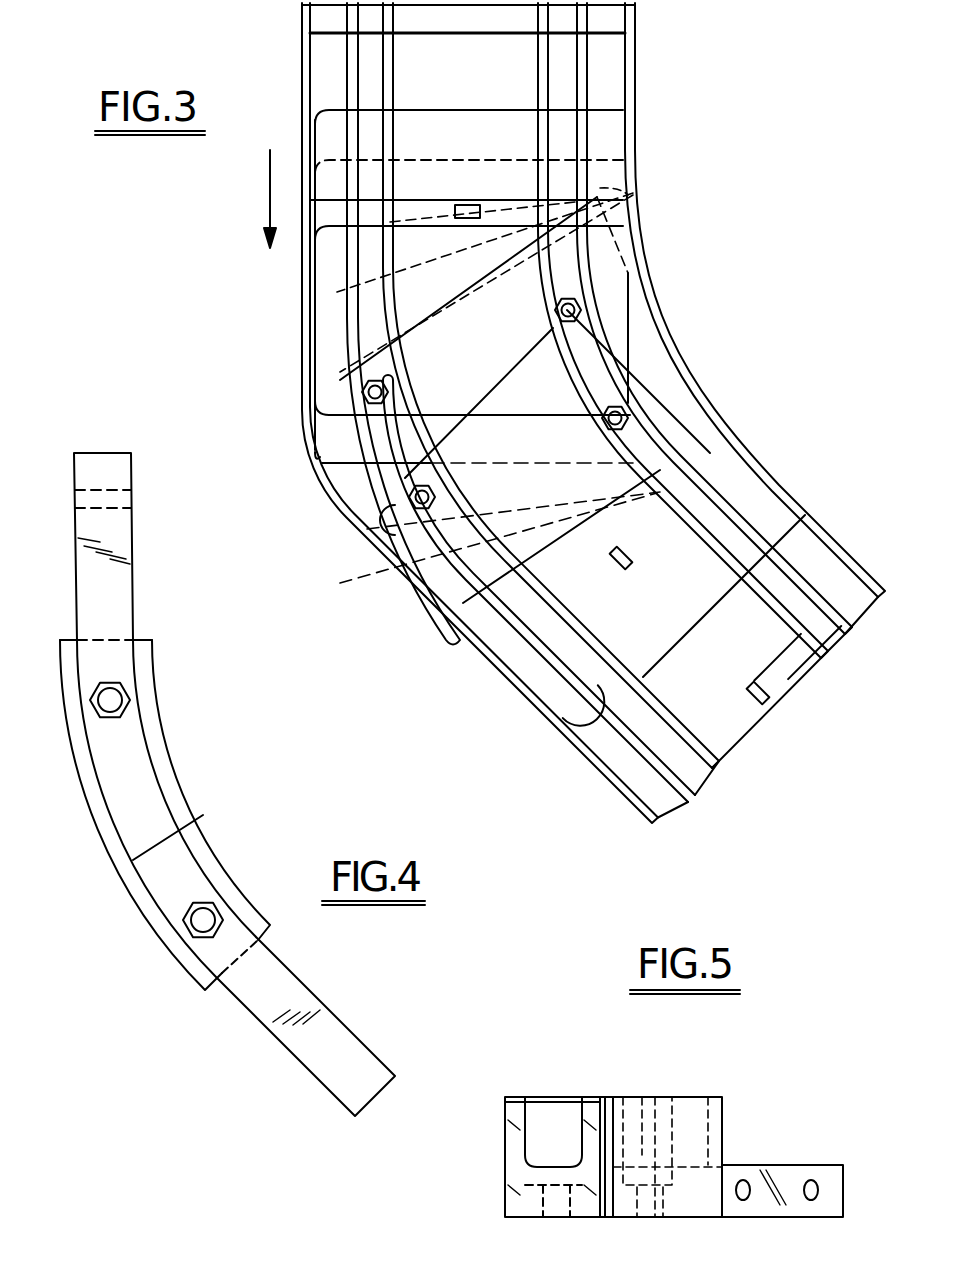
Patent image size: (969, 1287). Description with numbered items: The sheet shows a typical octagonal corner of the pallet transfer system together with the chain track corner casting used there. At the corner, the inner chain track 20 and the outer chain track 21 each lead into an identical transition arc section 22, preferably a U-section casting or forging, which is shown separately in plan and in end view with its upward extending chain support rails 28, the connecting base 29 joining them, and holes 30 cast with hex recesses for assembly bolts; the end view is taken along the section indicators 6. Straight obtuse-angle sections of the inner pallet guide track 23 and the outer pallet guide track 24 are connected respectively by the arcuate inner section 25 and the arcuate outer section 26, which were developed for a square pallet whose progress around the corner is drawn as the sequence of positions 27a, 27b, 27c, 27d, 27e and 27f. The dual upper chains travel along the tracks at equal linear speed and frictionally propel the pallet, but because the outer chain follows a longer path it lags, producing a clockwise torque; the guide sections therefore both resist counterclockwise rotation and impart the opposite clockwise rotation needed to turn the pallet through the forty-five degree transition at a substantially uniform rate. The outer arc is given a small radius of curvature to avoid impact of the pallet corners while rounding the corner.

In FIG. 3, the inner chain track 20 is at (530, 62).
In FIG. 3, the outer chain track 21 is at (412, 68).
In FIG. 3, the transition arc section 22 is at (418, 404).
In FIG. 4, the transition arc section 22 is at (216, 784).
In FIG. 3, the inner pallet guide track 23 is at (637, 70).
In FIG. 3, the outer pallet guide track 24 is at (302, 85).
In FIG. 3, the arcuate inner section 25 is at (658, 315).
In FIG. 3, the arcuate outer section 26 is at (323, 492).
In FIG. 3, the pallet position 27a is at (500, 141).
In FIG. 3, the pallet position 27b is at (495, 191).
In FIG. 3, the pallet position 27c is at (445, 255).
In FIG. 3, the pallet position 27d is at (448, 298).
In FIG. 3, the pallet position 27e is at (490, 350).
In FIG. 3, the pallet position 27f is at (668, 618).
In FIG. 4, the chain support rails 28 is at (203, 815).
In FIG. 5, the chain support rails 28 is at (590, 1097).
In FIG. 4, the connecting base 29 is at (143, 796).
In FIG. 5, the connecting base 29 is at (537, 1212).
In FIG. 4, the holes 30 is at (122, 699).
In FIG. 3, the section line 6- 6 is at (896, 525).